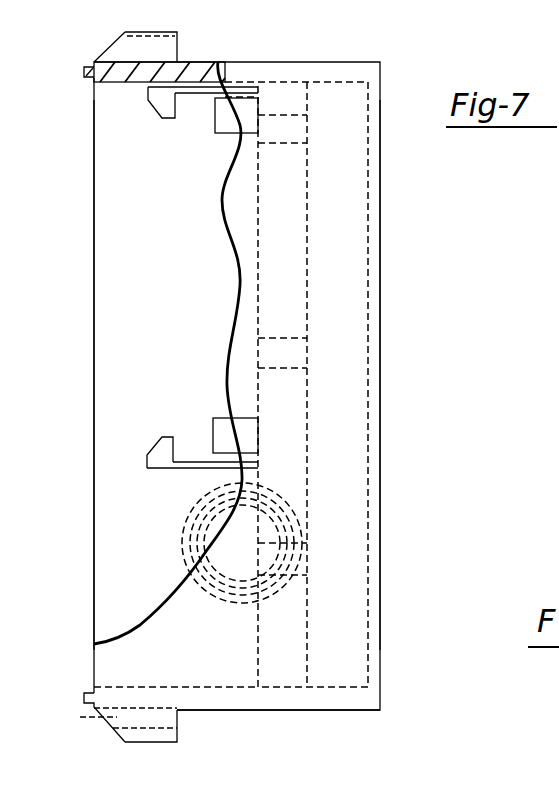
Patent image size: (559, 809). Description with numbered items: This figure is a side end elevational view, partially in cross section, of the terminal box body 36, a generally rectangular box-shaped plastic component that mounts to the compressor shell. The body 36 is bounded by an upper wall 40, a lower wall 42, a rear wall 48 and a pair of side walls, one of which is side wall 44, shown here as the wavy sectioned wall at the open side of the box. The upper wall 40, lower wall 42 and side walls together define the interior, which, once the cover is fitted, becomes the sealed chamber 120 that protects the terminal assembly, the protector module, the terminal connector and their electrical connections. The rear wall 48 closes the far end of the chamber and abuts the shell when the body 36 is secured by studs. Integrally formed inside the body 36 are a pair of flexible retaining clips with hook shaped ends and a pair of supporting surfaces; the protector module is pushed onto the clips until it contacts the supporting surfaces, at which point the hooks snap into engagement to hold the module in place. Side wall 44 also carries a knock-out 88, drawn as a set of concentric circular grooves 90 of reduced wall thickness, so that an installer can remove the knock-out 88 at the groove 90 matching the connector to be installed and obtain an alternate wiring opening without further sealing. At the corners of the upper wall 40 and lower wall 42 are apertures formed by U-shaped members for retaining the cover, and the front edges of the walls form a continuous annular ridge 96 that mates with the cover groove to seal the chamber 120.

The body 36 is at (398, 40).
The upper wall 40 is at (310, 70).
The lower wall 42 is at (227, 704).
The side wall 44 is at (176, 263).
The rear wall 48 is at (384, 356).
The knock-out 88 is at (207, 523).
The concentric circular groove 90 is at (178, 555).
The continuous annular ridge 96 is at (83, 70).
The sealed chamber 120 is at (107, 353).